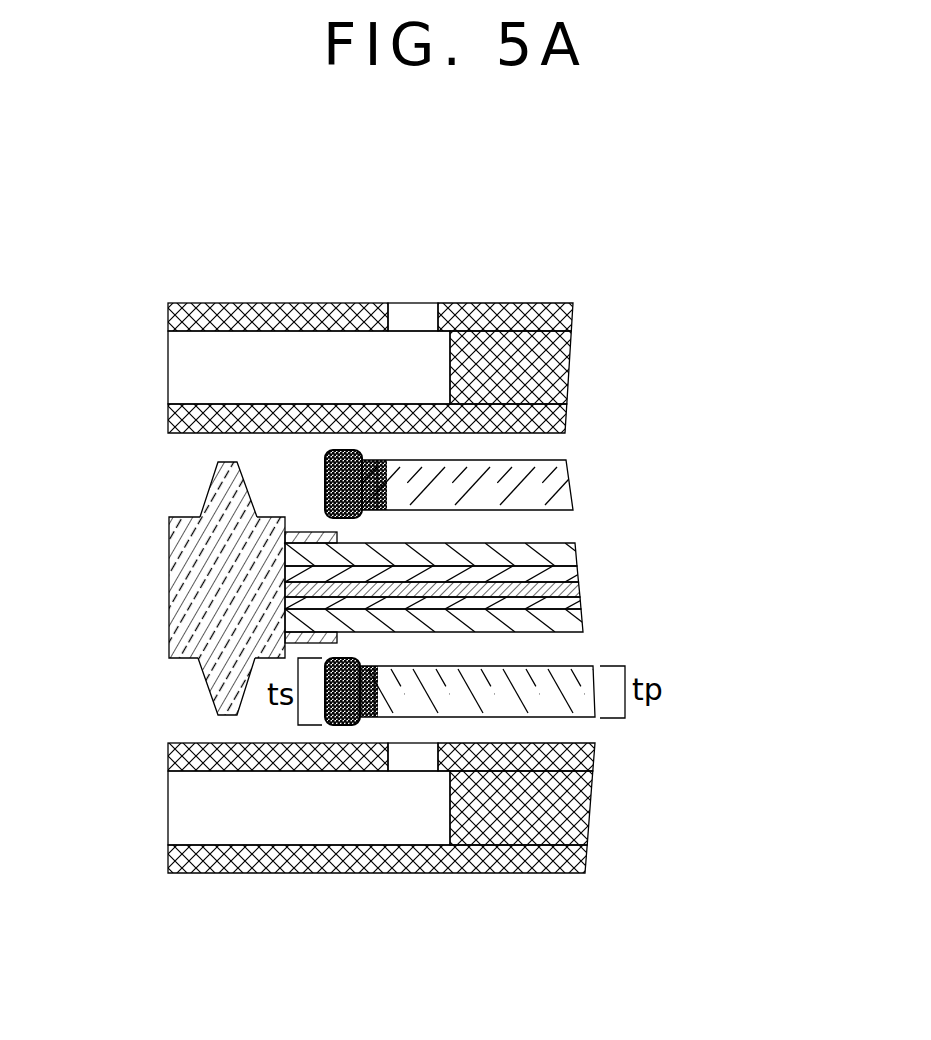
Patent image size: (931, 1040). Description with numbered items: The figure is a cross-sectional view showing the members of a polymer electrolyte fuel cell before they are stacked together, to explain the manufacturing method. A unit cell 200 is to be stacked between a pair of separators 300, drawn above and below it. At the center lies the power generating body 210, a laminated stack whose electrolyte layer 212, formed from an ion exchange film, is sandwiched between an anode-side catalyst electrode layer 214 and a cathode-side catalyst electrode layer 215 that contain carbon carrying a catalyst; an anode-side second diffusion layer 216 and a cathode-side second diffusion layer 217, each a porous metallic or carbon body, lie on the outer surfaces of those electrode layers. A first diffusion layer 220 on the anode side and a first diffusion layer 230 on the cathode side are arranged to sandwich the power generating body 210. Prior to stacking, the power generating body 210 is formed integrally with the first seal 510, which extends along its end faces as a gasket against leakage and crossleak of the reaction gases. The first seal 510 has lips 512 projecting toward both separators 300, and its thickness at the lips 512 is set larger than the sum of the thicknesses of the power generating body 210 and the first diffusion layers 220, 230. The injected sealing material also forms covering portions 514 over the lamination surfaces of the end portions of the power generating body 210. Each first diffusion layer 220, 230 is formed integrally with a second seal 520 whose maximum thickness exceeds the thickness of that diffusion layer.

The unit cell 200 is at (577, 587).
The power generating body 210 is at (540, 587).
The electrolyte layer 212 is at (584, 595).
The anode-side catalyst electrode layer 214 is at (581, 573).
The cathode-side catalyst electrode layer 215 is at (587, 620).
The anode-side second diffusion layer 216 is at (579, 552).
The cathode-side second diffusion layer 217 is at (503, 639).
The first diffusion layer 220 is at (573, 484).
The first diffusion layer 230 is at (595, 685).
The separator 300 is at (569, 372).
The first seal 510 is at (168, 550).
The lip 512 is at (207, 485).
The covering portion 514 is at (300, 532).
The second seal 520 is at (350, 666).